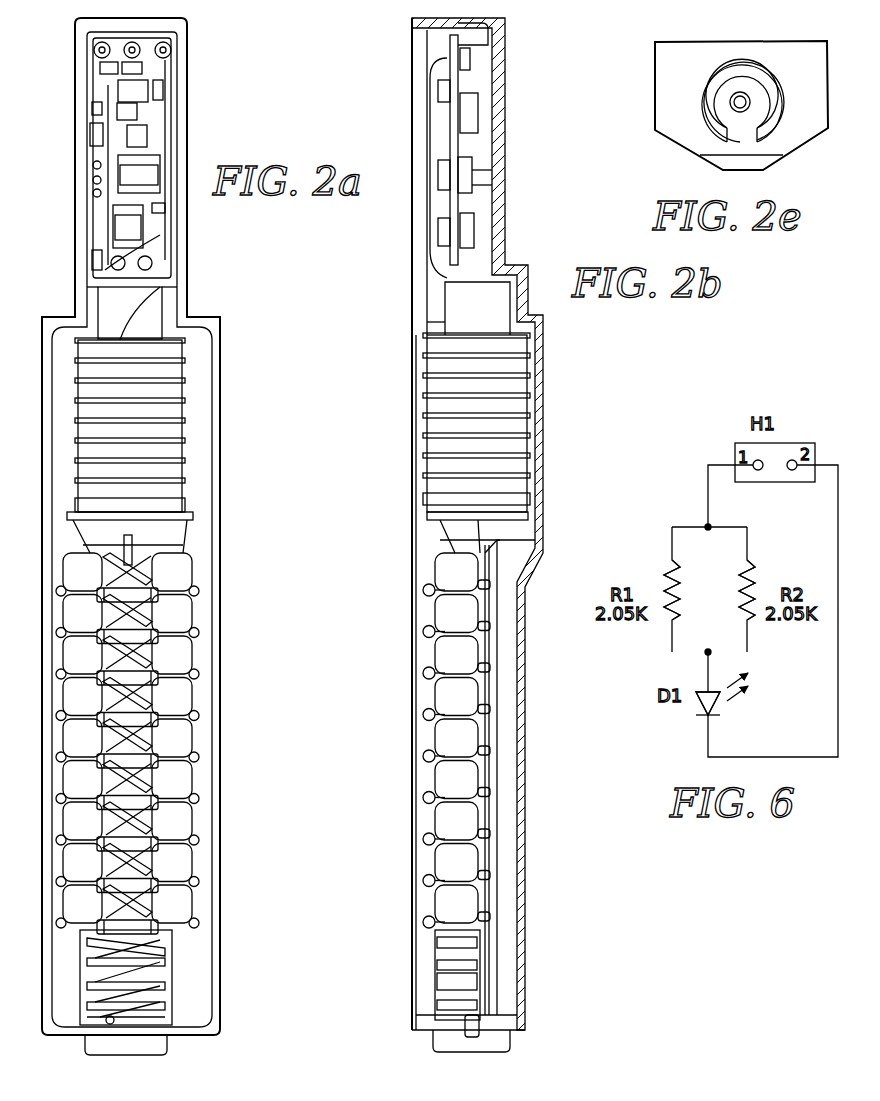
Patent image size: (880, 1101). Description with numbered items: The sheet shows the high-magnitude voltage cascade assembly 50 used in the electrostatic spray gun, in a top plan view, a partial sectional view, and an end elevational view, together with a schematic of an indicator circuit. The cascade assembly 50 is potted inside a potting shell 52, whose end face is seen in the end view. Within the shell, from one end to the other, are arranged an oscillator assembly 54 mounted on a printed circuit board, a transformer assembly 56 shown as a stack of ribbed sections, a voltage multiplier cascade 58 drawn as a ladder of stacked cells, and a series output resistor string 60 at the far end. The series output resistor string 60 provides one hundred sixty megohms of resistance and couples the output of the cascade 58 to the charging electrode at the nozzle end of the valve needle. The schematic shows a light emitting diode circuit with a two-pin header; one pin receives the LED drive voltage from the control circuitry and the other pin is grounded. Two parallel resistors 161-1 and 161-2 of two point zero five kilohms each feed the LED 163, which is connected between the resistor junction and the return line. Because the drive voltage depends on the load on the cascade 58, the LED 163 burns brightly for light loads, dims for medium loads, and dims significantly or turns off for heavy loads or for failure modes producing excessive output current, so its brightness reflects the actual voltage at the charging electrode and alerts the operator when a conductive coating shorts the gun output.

In FIG. 2A, the cascade assembly 50 is at (230, 390).
In FIG. 2B, the cascade assembly 50 is at (591, 404).
In FIG. 2A, the potting shell 52 is at (213, 315).
In FIG. 2B, the potting shell 52 is at (533, 313).
In FIG. 2E, the potting shell 52 is at (655, 98).
In FIG. 2A, the oscillator assembly 54 is at (175, 54).
In FIG. 2B, the oscillator assembly 54 is at (421, 156).
In FIG. 2A, the transformer assembly 56 is at (156, 455).
In FIG. 2B, the transformer assembly 56 is at (443, 449).
In FIG. 2A, the voltage multiplier cascade 58 is at (198, 661).
In FIG. 2B, the voltage multiplier cascade 58 is at (410, 645).
In FIG. 2A, the series output resistor string 60 is at (183, 978).
In FIG. 2B, the series output resistor string 60 is at (423, 986).
In FIG. 6, the first resistor 161-1 is at (668, 580).
In FIG. 6, the second resistor 161-2 is at (760, 580).
In FIG. 6, the LED 163 is at (703, 717).